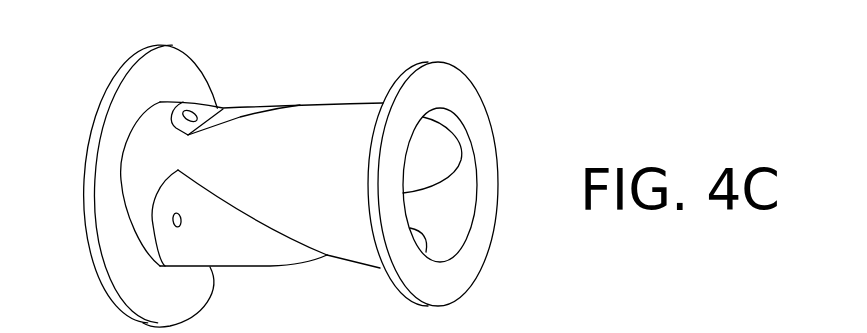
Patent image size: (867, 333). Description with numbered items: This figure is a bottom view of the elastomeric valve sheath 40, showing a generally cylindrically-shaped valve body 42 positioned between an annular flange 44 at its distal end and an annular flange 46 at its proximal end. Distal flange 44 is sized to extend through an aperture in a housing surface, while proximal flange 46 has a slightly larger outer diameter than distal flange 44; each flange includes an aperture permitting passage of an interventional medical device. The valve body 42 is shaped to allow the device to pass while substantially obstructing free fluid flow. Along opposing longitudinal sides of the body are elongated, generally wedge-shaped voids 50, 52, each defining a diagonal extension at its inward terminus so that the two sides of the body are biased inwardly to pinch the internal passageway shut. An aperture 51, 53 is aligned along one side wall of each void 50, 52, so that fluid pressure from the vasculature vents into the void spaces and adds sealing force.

The elastomeric valve sheath 40 is at (357, 93).
The valve body 42 is at (218, 271).
The annular flange 44 is at (468, 292).
The annular flange 46 is at (104, 288).
The elongated void 50 is at (243, 247).
The aperture 51 is at (172, 216).
The elongated void 52 is at (203, 108).
The aperture 53 is at (223, 109).